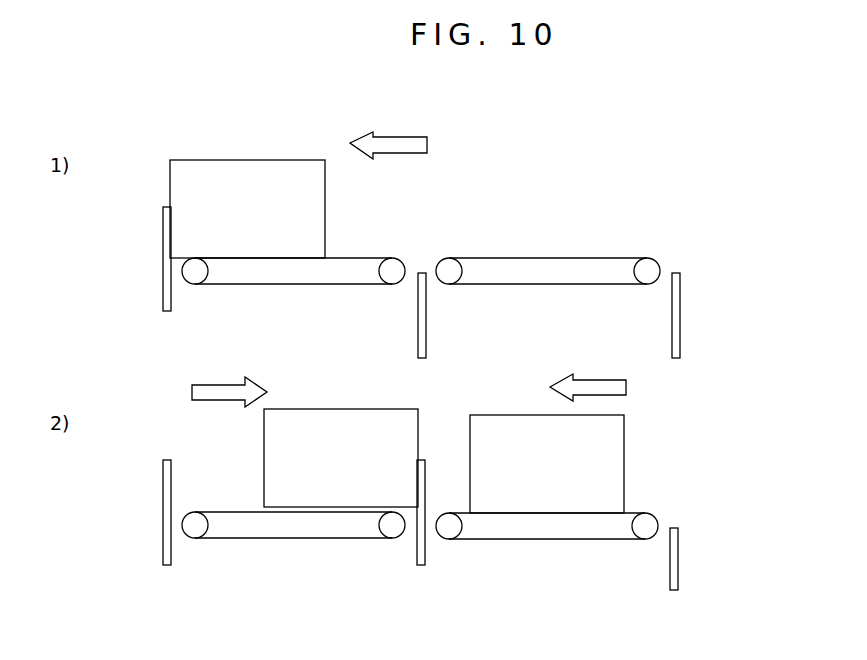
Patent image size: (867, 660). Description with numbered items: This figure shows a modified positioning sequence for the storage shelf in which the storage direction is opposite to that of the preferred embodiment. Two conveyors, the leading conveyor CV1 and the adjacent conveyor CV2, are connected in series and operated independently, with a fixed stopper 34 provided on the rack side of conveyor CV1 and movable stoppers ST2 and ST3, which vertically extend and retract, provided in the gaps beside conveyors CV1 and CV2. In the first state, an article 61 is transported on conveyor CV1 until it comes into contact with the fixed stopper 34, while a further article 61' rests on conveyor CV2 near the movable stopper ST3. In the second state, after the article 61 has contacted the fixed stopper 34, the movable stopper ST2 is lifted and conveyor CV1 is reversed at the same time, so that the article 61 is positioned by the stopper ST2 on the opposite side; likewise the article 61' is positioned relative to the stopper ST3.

The fixed stopper 34 is at (163, 235).
The article 61 is at (294, 333).
The article 61' is at (583, 464).
The conveyor CV1 is at (305, 278).
The conveyor CV2 is at (556, 280).
The movable stopper ST2 is at (426, 325).
The movable stopper ST3 is at (680, 330).